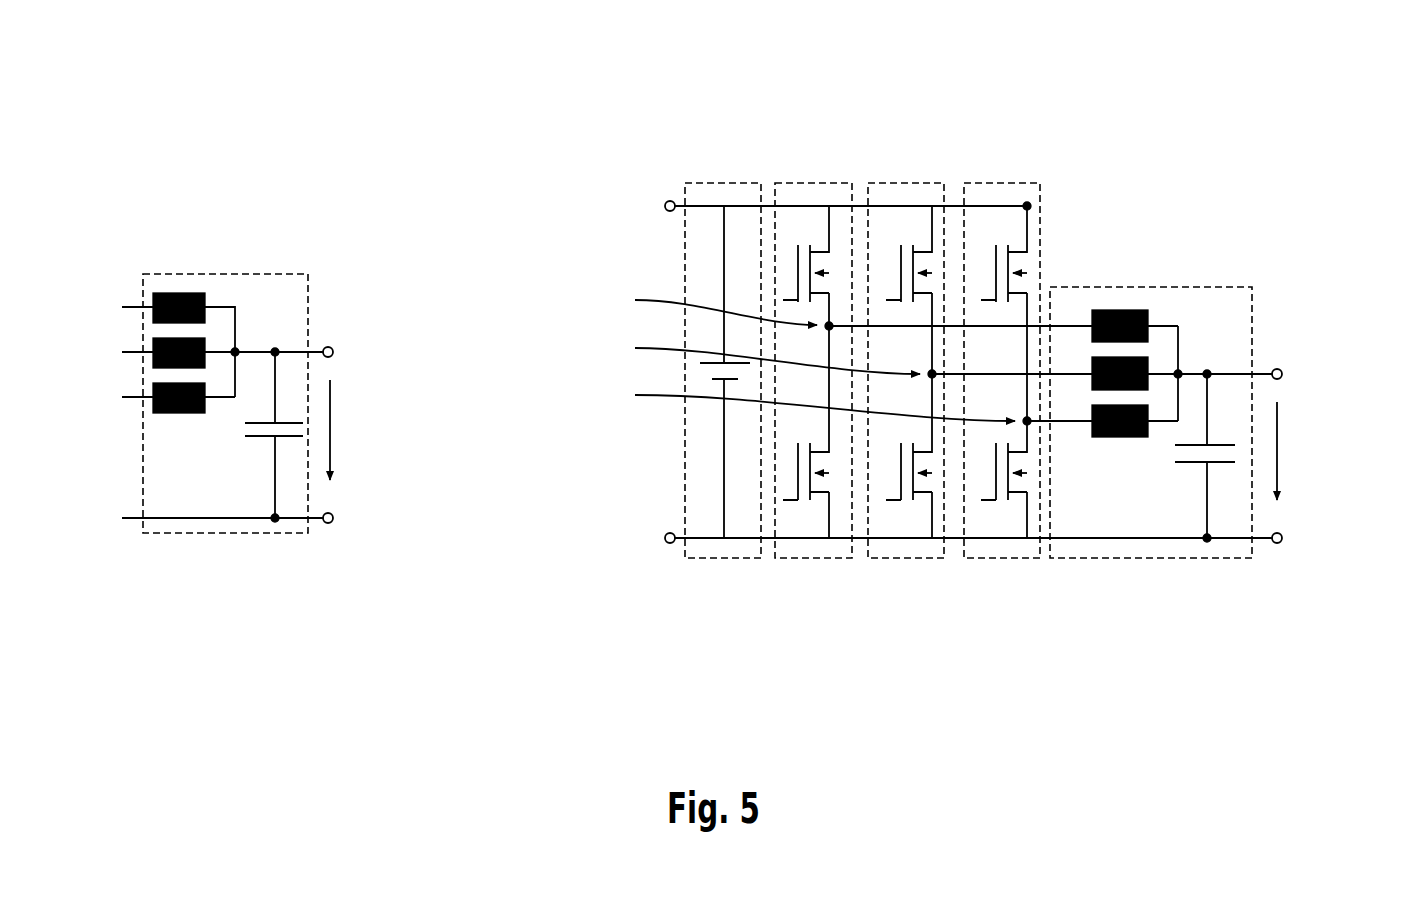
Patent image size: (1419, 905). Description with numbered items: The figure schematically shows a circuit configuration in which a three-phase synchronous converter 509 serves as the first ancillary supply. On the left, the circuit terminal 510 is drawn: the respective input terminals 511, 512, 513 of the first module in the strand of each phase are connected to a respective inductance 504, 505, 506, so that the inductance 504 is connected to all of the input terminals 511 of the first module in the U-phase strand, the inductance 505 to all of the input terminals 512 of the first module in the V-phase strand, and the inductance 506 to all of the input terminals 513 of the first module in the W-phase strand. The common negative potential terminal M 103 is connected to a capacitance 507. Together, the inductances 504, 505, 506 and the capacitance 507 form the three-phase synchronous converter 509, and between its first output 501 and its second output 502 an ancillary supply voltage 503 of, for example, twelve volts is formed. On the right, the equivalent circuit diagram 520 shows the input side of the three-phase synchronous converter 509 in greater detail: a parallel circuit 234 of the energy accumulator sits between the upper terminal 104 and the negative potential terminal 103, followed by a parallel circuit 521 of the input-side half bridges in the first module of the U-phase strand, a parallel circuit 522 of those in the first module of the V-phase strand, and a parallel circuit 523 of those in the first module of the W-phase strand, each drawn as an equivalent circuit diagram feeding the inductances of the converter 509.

The circuit terminal of three-phase synchronous converter 510 is at (122, 115).
The equivalent circuit of three-phase synchronous converter 520 is at (845, 115).
The positive supply terminal 104 is at (660, 201).
The common negative potential terminal M 103 is at (118, 515).
The input terminals of first module in U-phase strand 511 is at (118, 304).
The input terminals of first module in V-phase strand 512 is at (118, 349).
The input terminals of first module in W-phase strand 513 is at (118, 394).
The inductance L_U 504 is at (192, 290).
The inductance L_V 505 is at (210, 344).
The inductance L_W 506 is at (210, 390).
The first output of three-phase synchronous converter 501 is at (348, 352).
The second output of three-phase synchronous converter 502 is at (348, 518).
The output voltage of three-phase synchronous converter 503 is at (342, 435).
The capacitance 507 is at (258, 448).
The three-phase synchronous converter 509 is at (153, 540).
The parallel circuit of energy accumulator 234 is at (721, 563).
The parallel circuit of input-side half bridges in first module of U-phase strand 521 is at (813, 563).
The parallel circuit of input-side half bridges in first module of V-phase strand 522 is at (906, 563).
The parallel circuit of input-side half bridges in first module of W-phase strand 523 is at (1001, 563).